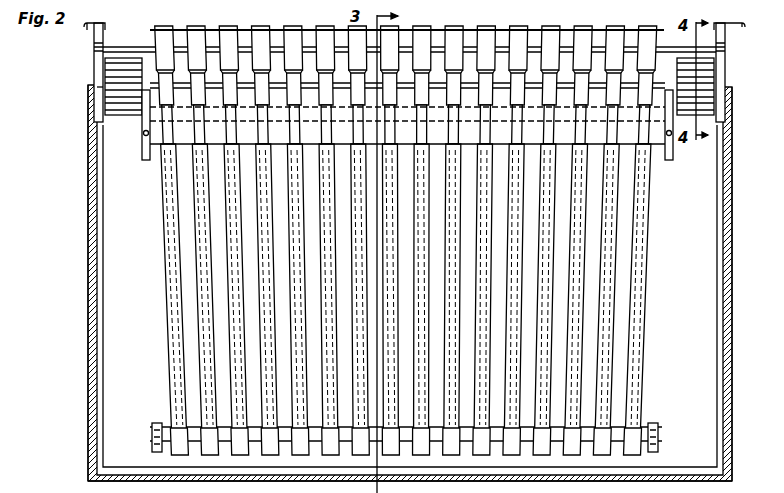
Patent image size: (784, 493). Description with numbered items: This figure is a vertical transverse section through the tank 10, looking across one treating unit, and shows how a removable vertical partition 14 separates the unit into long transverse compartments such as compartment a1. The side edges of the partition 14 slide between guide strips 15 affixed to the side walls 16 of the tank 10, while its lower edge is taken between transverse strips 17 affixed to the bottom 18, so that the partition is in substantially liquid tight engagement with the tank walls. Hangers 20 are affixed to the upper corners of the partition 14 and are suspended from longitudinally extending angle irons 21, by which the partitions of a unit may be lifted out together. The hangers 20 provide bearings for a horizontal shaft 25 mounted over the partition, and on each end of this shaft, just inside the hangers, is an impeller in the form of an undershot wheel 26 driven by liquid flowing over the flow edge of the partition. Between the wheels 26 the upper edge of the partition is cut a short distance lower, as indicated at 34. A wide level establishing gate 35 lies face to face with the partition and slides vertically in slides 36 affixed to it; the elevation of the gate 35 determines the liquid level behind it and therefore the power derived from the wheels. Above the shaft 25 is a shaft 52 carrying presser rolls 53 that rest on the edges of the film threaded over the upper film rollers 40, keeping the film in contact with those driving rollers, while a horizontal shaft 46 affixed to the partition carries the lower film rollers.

The tank 10 is at (86, 230).
The vertical partition 14 is at (688, 282).
The guide strip 15 is at (100, 200).
The side wall 16 is at (98, 172).
The transverse strip 17 is at (122, 466).
The bottom 18 is at (178, 480).
The hanger 20 is at (94, 68).
The angle iron 21 is at (82, 28).
The horizontal shaft 25 is at (94, 82).
The undershot wheel 26 is at (120, 64).
The lowered upper edge portion 34 is at (158, 150).
The level establishing gate 35 is at (650, 150).
The slide 36 is at (140, 160).
The upper film roller 40 is at (296, 95).
The horizontal shaft 46 is at (660, 445).
The shaft 52 is at (144, 46).
The presser roll 53 is at (205, 18).
The compartment a1 is at (128, 297).